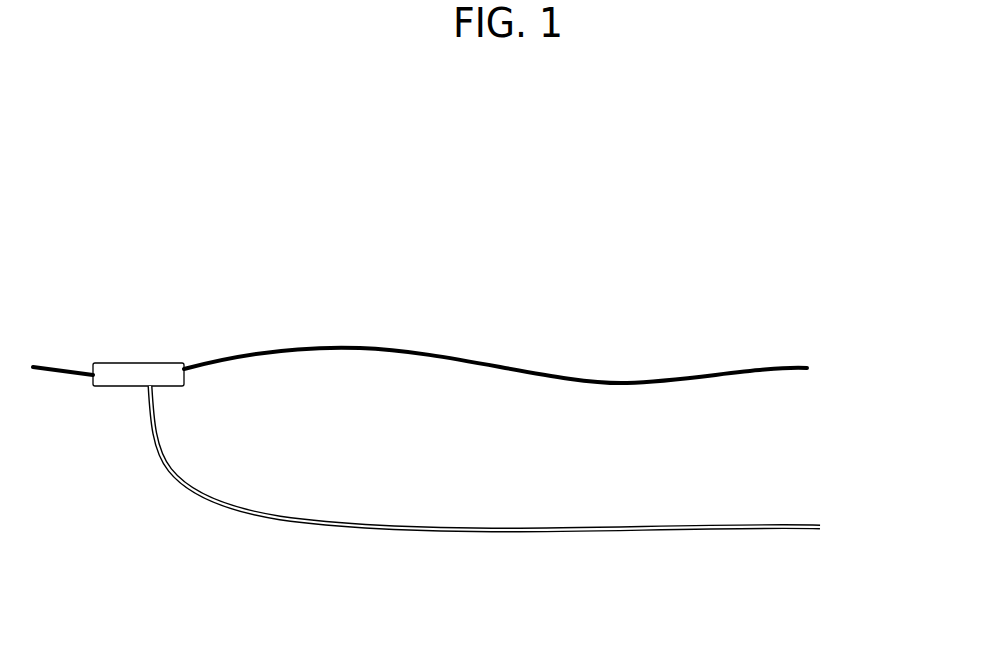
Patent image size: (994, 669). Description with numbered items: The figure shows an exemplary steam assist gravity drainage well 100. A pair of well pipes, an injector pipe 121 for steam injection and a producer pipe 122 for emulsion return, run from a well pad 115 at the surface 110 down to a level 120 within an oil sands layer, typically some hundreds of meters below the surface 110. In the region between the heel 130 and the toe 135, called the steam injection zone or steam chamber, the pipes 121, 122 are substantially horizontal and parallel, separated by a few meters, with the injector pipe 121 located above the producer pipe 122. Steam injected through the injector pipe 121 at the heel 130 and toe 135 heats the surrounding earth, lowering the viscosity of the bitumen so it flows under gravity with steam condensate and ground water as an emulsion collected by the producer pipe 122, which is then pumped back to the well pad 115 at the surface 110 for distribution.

The steam assist gravity drainage (SAGD) well 100 is at (535, 120).
The surface 110 is at (827, 365).
The well pad 115 is at (121, 363).
The level 120 is at (827, 523).
The injector pipe 121 is at (242, 442).
The producer pipe 122 is at (155, 463).
The heel 130 is at (307, 550).
The toe 135 is at (822, 550).